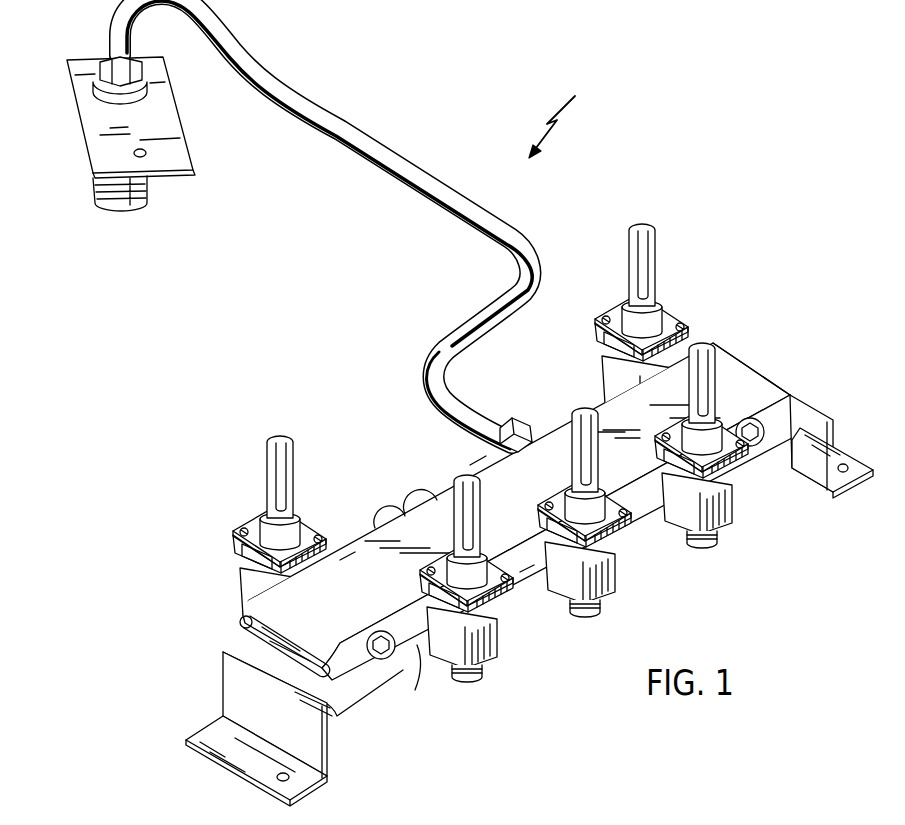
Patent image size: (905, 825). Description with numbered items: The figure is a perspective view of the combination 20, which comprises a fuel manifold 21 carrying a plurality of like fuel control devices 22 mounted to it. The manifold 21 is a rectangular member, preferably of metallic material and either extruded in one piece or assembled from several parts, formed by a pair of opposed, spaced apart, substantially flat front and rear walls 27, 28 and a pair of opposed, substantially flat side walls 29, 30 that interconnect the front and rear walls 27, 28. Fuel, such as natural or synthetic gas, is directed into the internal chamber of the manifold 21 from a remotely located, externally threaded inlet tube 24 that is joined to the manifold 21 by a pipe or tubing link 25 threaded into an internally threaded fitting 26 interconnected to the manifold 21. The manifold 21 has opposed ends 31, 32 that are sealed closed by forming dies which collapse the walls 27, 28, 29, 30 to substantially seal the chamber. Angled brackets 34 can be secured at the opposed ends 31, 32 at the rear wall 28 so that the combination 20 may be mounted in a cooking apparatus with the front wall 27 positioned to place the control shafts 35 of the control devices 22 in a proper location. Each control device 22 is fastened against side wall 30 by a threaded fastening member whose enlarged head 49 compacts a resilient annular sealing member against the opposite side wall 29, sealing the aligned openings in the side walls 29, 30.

The combination 20 is at (572, 117).
The fuel manifold 21 is at (492, 455).
The fuel control device 22 is at (606, 346).
The inlet tube 24 is at (95, 180).
The pipe or tubing link 25 is at (353, 123).
The fitting 26 is at (527, 424).
The front wall 27 is at (347, 563).
The rear wall 28 is at (419, 660).
The side wall 29 is at (527, 568).
The side wall 30 is at (478, 468).
The end 31 is at (262, 640).
The end 32 is at (762, 373).
The angled bracket 34 is at (226, 690).
The control shaft 35 is at (658, 248).
The enlarged head 49 is at (380, 633).